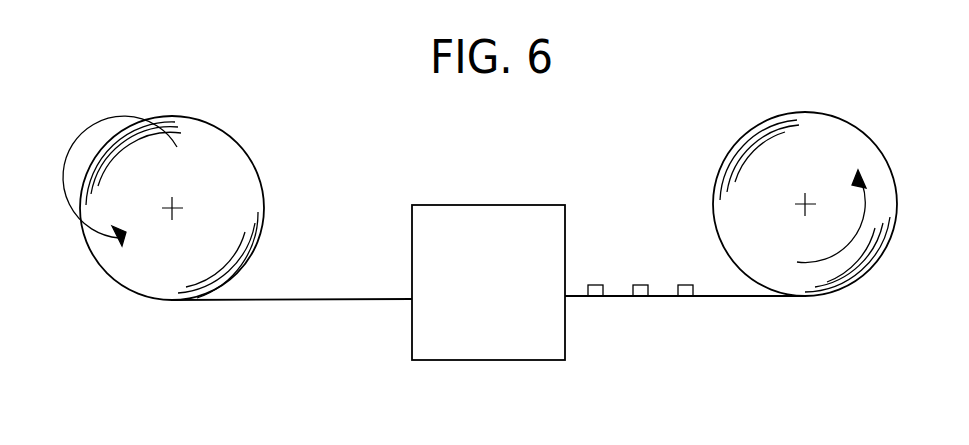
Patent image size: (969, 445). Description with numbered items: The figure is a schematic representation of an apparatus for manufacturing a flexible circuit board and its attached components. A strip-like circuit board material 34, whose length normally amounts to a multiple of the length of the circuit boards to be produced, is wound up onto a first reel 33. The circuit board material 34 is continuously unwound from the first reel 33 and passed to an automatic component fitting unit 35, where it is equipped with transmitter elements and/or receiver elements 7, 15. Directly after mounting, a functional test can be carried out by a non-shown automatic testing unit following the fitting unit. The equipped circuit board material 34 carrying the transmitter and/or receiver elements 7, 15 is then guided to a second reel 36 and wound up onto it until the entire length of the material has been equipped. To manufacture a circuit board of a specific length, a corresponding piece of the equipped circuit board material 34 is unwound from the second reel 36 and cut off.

The first reel 33 is at (216, 156).
The circuit board material 34 is at (96, 163).
The automatic component fitting unit 35 is at (515, 335).
The second reel 36 is at (843, 147).
The transmitter element 7 is at (640, 256).
The receiver element 15 is at (600, 285).